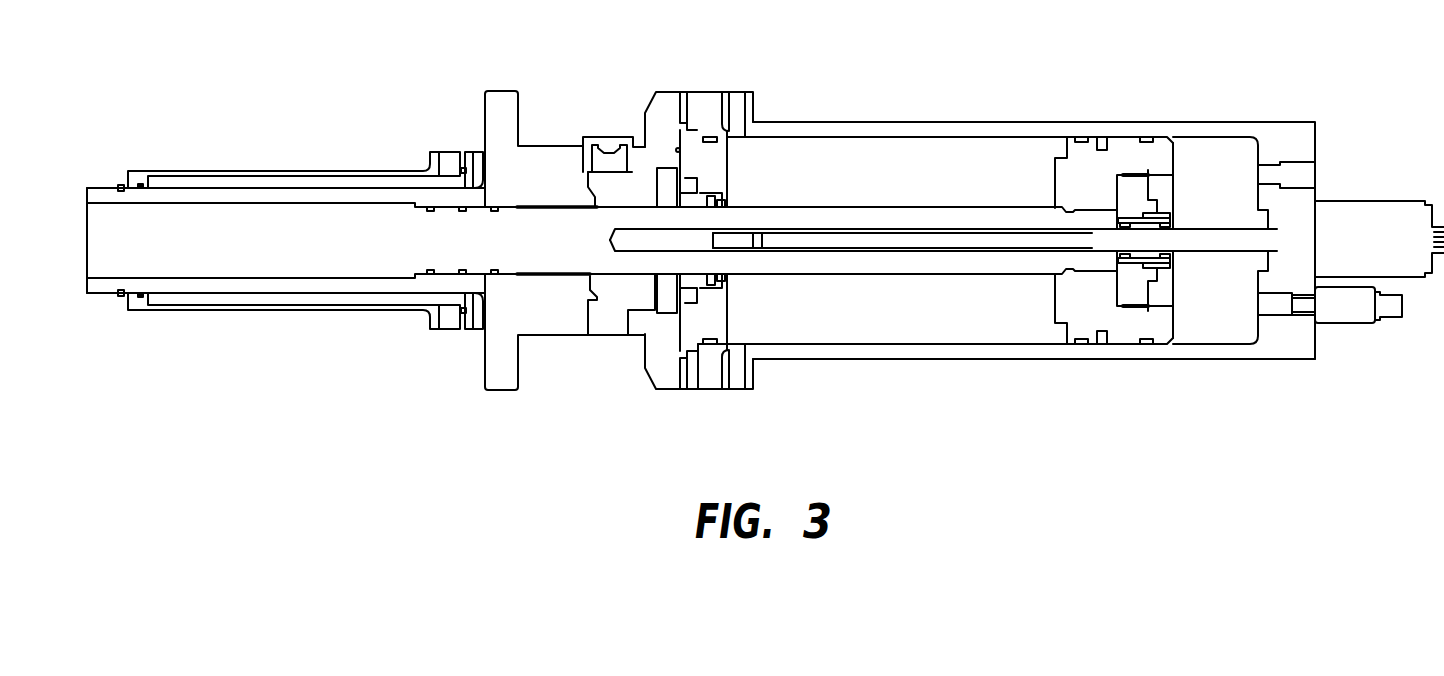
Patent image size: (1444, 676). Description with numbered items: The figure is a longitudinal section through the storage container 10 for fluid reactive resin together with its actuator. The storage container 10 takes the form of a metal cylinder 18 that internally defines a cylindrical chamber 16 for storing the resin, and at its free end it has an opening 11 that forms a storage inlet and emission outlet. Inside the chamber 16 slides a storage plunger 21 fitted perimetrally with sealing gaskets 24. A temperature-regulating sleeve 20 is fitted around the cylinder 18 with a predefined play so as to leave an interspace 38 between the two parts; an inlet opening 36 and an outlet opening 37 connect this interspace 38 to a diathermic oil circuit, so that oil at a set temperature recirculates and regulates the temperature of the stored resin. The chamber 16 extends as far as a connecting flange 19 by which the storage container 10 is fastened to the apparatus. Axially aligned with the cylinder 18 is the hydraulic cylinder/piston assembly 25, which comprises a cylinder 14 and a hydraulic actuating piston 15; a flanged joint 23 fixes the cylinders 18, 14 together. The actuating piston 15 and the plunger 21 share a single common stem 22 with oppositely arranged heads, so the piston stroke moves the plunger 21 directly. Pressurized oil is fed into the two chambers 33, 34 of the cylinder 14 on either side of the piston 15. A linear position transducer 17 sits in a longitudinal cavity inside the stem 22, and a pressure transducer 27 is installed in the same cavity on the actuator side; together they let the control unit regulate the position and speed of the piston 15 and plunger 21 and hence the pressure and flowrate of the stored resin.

The storage container 10 is at (299, 191).
The opening 11 is at (107, 268).
The cylinder 14 is at (985, 327).
The hydraulic actuating piston 15 is at (1080, 292).
The chamber 16 is at (378, 265).
The linear position transducer 17 is at (827, 248).
The metal cylinder 18 is at (228, 196).
The connecting flange 19 is at (507, 90).
The temperature-regulating sleeve 20 is at (240, 305).
The storage plunger 21 is at (508, 262).
The stem 22 is at (918, 222).
The flanged joint 23 is at (662, 79).
The sealing gaskets 24 is at (507, 252).
The cylinder/piston assembly 25 is at (997, 120).
The pressure transducer 27 is at (1355, 312).
The chamber 33 is at (1216, 163).
The chamber 34 is at (853, 327).
The inlet opening 36 is at (440, 152).
The outlet opening 37 is at (449, 325).
The interspace 38 is at (316, 298).